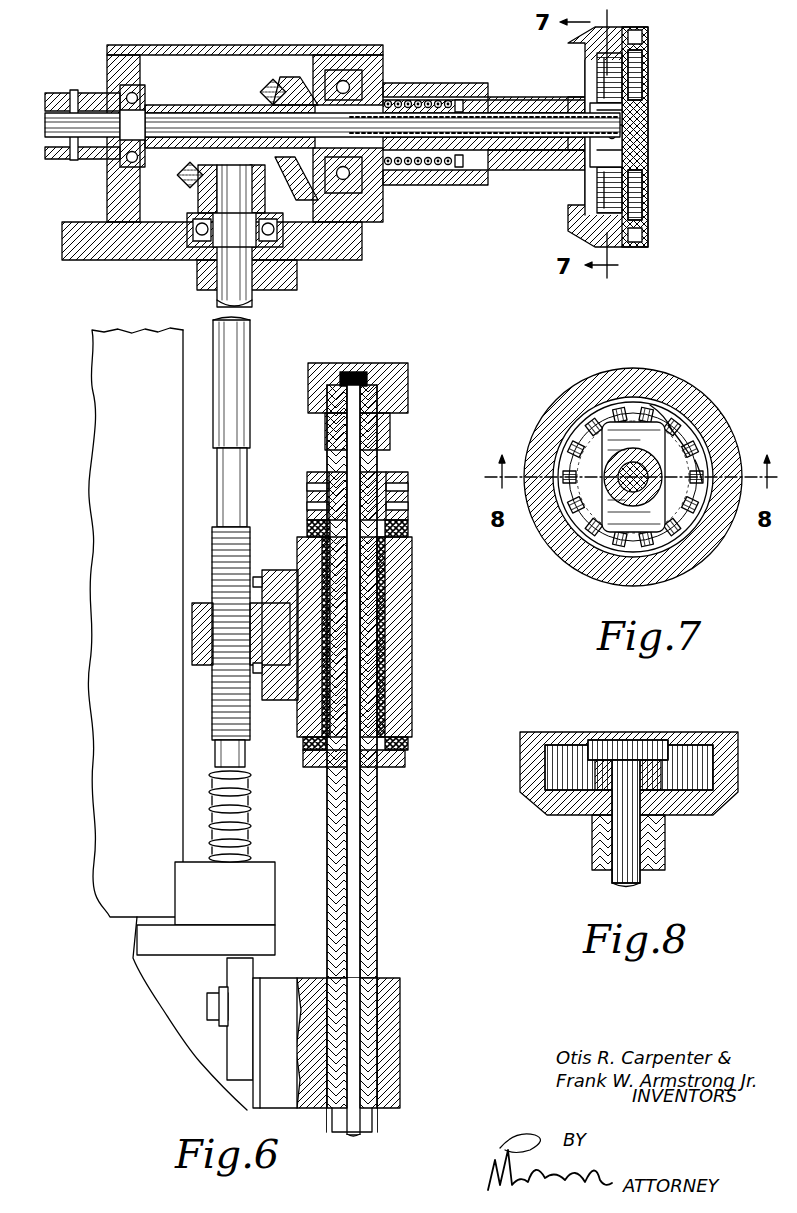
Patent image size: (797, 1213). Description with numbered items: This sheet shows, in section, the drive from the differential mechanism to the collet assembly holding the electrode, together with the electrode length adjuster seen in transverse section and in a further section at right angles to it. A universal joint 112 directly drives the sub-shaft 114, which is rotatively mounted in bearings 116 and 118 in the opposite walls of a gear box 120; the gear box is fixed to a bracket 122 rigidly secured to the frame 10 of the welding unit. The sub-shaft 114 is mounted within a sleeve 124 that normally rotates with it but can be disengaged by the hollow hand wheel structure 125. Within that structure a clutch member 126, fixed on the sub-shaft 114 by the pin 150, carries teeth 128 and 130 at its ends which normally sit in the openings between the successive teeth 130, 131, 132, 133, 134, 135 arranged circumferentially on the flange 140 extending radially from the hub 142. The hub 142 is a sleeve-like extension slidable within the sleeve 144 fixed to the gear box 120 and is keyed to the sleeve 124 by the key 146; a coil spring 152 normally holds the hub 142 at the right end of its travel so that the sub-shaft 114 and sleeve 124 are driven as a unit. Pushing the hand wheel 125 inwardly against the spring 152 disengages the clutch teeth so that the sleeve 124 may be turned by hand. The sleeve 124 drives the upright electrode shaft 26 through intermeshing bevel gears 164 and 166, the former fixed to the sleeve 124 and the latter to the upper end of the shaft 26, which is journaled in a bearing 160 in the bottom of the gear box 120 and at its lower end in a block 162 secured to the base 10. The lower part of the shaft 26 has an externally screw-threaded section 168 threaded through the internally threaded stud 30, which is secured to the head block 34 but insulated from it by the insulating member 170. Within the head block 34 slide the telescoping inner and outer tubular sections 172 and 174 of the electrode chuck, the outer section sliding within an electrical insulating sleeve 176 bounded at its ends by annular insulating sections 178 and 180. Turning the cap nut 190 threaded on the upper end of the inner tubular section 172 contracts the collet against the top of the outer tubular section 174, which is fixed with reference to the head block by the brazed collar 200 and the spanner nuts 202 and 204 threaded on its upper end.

In FIG. 6, the frame 10 is at (132, 592).
In FIG. 6, the upright electrode shaft 26 is at (241, 378).
In FIG. 6, the internally screw-threaded stud 30 is at (192, 624).
In FIG. 6, the head block 34 is at (412, 581).
In FIG. 6, the universal joint 112 is at (62, 160).
In FIG. 6, the sub-shaft 114 is at (203, 113).
In FIG. 6, the bearing 116 is at (120, 88).
In FIG. 6, the bearing 118 is at (384, 62).
In FIG. 6, the gear box 120 is at (282, 48).
In FIG. 6, the bracket 122 is at (282, 292).
In FIG. 6, the sleeve 124 is at (173, 104).
In FIG. 6, the electrode length adjustor hand wheel structure 125 is at (648, 233).
In FIG. 6, the clutch member 126 is at (633, 112).
In FIG. 7, the clutch member 126 is at (700, 528).
In FIG. 7, the clutch tooth 128 is at (636, 405).
In FIG. 7, the tooth 130 is at (552, 440).
In FIG. 7, the flange tooth 131 is at (570, 395).
In FIG. 7, the flange tooth 132 is at (630, 392).
In FIG. 7, the flange tooth 133 is at (660, 405).
In FIG. 7, the flange tooth 134 is at (682, 445).
In FIG. 7, the flange tooth 135 is at (700, 470).
In FIG. 6, the flange 140 is at (570, 201).
In FIG. 6, the hub 142 is at (505, 172).
In FIG. 6, the sleeve 144 is at (428, 186).
In FIG. 6, the key 146 is at (508, 106).
In FIG. 6, the pin 150 is at (640, 140).
In FIG. 6, the coil spring 152 is at (452, 98).
In FIG. 6, the bearing 160 is at (281, 222).
In FIG. 6, the block 162 is at (259, 873).
In FIG. 6, the bevel gear 164 is at (320, 82).
In FIG. 6, the bevel gear 166 is at (192, 184).
In FIG. 6, the externally screw-threaded section 168 is at (212, 552).
In FIG. 6, the insulating member 170 is at (297, 573).
In FIG. 6, the inner tubular section 172 is at (352, 830).
In FIG. 6, the outer tubular section 174 is at (378, 811).
In FIG. 6, the electrical insulating sleeve 176 is at (392, 640).
In FIG. 6, the annular insulating section 178 is at (410, 530).
In FIG. 6, the annular insulating section 180 is at (405, 745).
In FIG. 6, the cap nut 190 is at (398, 364).
In FIG. 6, the collar 200 is at (405, 760).
In FIG. 6, the spanner nut 202 is at (404, 471).
In FIG. 6, the spanner nut 204 is at (406, 510).